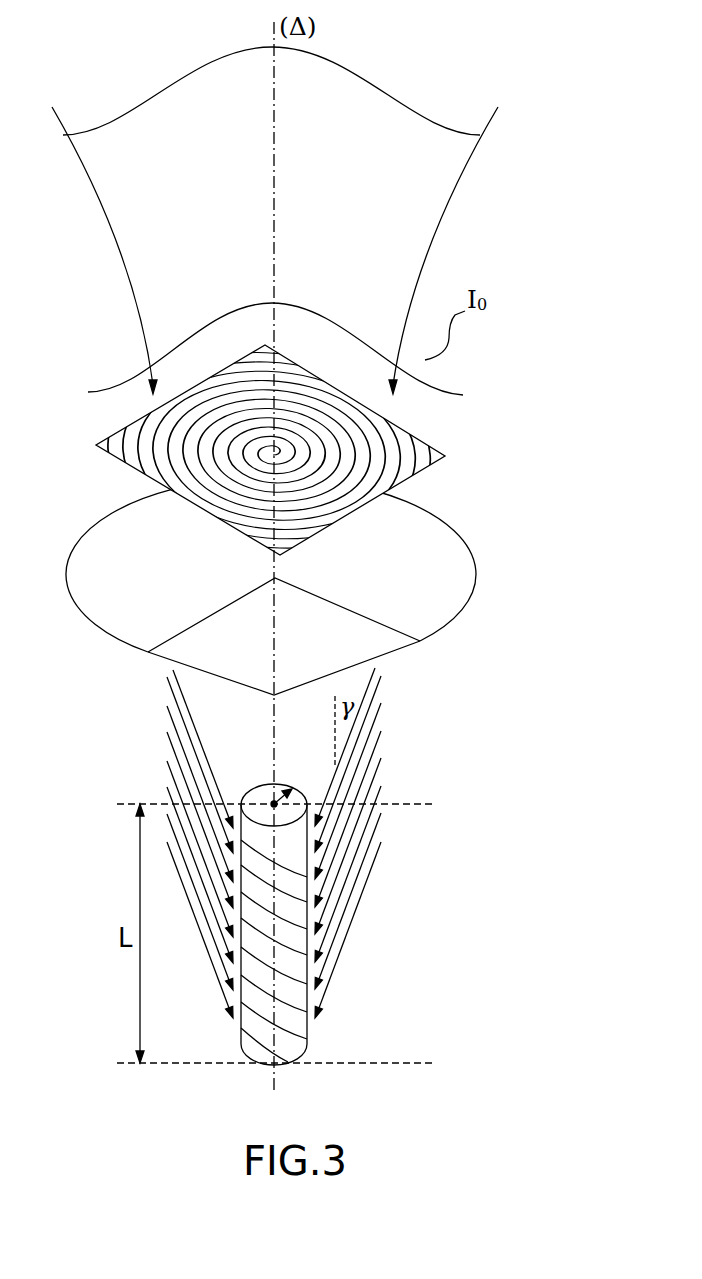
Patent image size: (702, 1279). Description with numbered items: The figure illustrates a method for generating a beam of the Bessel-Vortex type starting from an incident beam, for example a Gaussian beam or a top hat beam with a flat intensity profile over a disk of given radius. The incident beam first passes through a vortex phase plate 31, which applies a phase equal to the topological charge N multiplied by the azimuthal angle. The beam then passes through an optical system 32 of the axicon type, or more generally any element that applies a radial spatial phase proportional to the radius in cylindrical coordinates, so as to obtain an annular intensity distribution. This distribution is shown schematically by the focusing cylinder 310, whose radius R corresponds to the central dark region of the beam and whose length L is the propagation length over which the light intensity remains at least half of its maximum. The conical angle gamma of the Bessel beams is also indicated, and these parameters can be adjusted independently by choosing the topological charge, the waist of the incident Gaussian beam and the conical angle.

The vortex phase plate 31 is at (443, 452).
The optical system of the axicon type 32 is at (452, 565).
The focusing cylinder 310 is at (300, 1042).